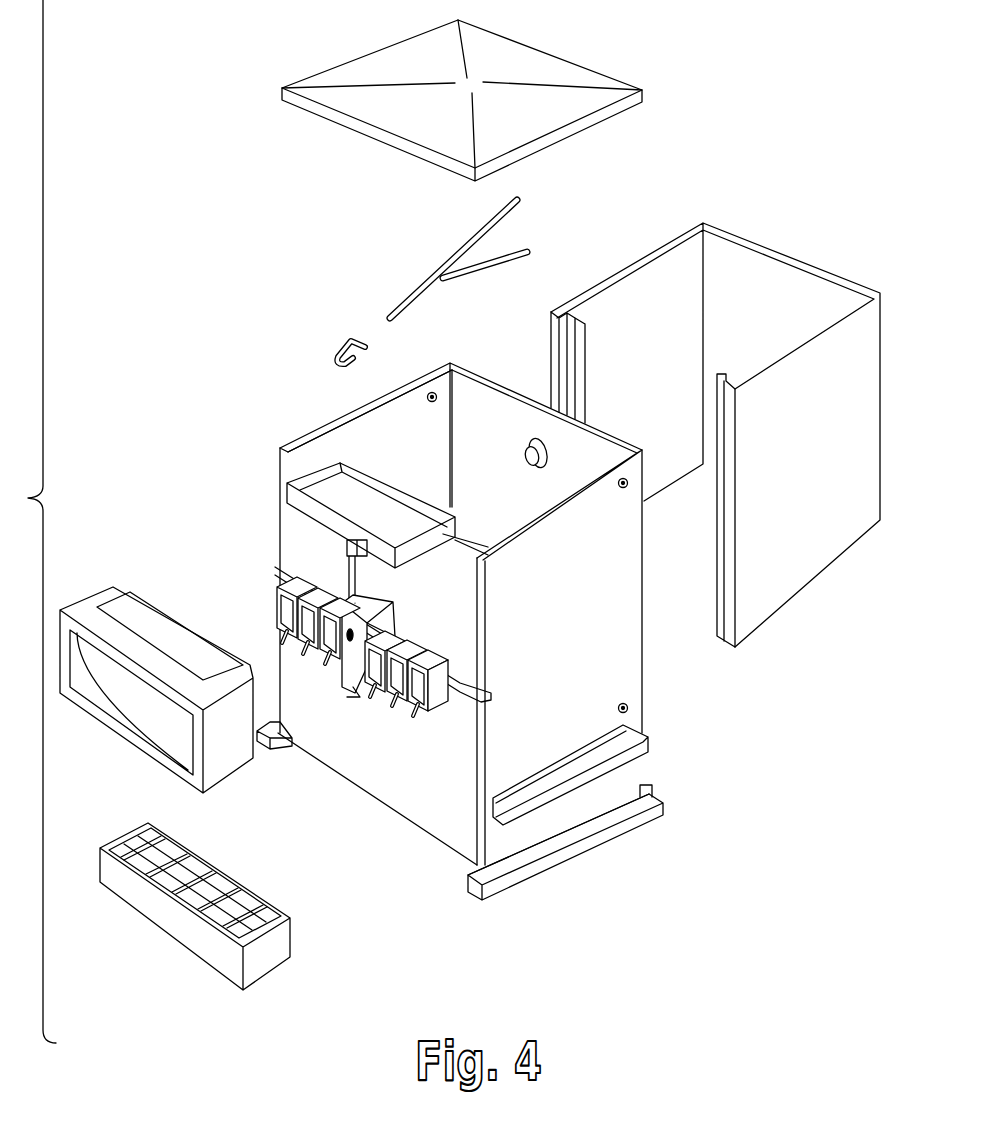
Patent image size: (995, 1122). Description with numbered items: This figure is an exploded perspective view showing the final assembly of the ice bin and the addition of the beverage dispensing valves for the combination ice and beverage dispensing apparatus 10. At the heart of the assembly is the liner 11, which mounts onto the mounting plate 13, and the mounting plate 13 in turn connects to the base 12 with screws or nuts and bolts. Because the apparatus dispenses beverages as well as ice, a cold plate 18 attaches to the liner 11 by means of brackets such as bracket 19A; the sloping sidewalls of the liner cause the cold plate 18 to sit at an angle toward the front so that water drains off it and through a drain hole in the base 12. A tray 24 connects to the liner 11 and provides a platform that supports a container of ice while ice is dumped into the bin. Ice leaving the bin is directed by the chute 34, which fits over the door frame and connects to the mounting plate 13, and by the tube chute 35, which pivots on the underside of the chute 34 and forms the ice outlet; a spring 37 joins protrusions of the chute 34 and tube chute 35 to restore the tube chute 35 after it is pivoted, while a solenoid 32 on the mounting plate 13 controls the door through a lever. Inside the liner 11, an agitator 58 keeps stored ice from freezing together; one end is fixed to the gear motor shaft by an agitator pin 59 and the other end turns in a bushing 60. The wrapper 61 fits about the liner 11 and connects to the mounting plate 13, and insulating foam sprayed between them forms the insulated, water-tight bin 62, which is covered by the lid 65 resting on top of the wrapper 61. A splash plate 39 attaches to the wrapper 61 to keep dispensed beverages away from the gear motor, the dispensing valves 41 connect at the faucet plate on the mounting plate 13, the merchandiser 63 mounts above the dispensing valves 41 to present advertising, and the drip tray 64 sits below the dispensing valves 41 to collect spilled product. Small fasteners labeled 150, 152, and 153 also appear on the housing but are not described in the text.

The dispensing apparatus 10 is at (596, 892).
The liner 11 is at (575, 633).
The base 12 is at (613, 837).
The mounting plate 13 is at (463, 606).
The cold plate 18 is at (646, 752).
The bracket 19A is at (575, 760).
The tray 24 is at (360, 517).
The solenoid 32 is at (347, 557).
The chute 34 is at (360, 605).
The tube chute 35 is at (353, 693).
The spring 37 is at (356, 634).
The splash plate 39 is at (374, 762).
The dispensing valves 41 is at (279, 638).
The agitator 58 is at (427, 287).
The agitator pin 59 is at (345, 352).
The bushing 60 is at (524, 457).
The wrapper 61 is at (779, 325).
The bin 62 is at (468, 455).
The merchandiser 63 is at (91, 594).
The drip tray 64 is at (223, 872).
The lid 65 is at (445, 122).
The screw 150 is at (620, 700).
The screw 152 is at (623, 492).
The screw 153 is at (432, 405).